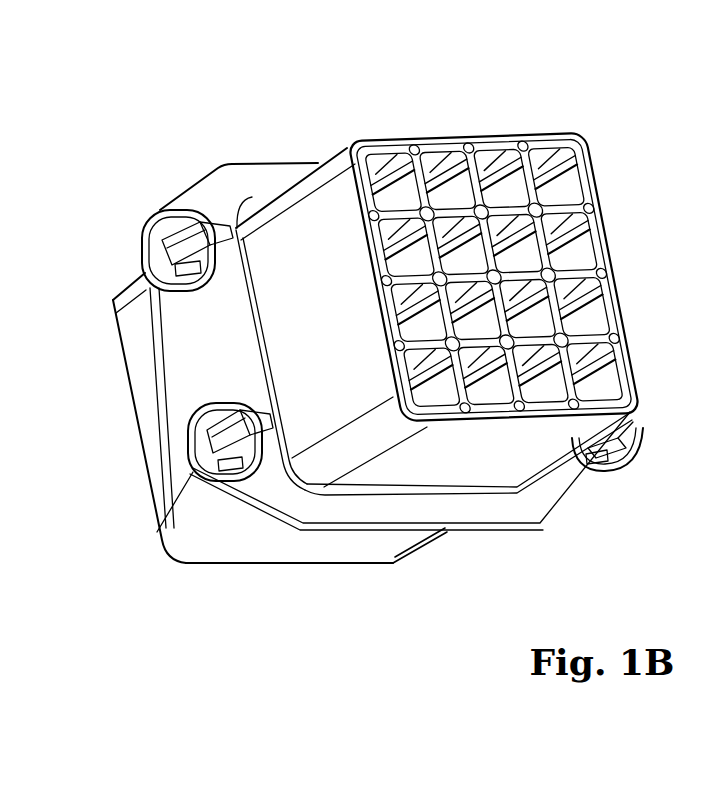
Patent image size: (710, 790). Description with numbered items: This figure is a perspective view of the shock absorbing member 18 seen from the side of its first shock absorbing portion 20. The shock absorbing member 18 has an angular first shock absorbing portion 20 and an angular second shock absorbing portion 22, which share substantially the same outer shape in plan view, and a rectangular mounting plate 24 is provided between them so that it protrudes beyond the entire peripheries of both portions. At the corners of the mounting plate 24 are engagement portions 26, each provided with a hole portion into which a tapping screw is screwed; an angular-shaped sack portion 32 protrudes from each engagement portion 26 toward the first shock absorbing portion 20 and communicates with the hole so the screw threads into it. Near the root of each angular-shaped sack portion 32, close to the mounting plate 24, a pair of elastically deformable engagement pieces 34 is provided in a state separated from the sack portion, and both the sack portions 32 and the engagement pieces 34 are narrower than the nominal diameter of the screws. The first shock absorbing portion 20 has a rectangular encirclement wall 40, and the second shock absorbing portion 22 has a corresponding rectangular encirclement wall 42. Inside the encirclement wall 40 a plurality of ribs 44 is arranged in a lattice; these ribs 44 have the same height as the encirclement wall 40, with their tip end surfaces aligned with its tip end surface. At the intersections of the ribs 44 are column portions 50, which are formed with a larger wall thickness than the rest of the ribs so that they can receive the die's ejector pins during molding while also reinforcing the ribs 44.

The shock absorbing member 18 is at (604, 112).
The first shock absorbing portion 20 is at (522, 277).
The second shock absorbing portion 22 is at (330, 570).
The mounting plate 24 is at (480, 536).
The engagement portion 26 is at (150, 213).
The angular-shaped sack portion 32 is at (226, 262).
The engagement piece 34 is at (207, 284).
The encirclement wall 40 is at (541, 455).
The encirclement wall 42 is at (378, 553).
The rib 44 is at (494, 276).
The column portion 50 is at (640, 358).